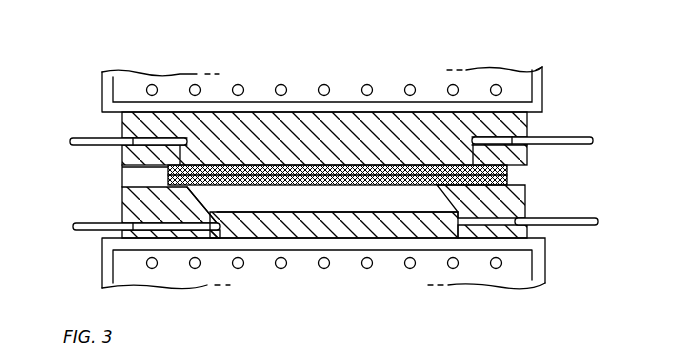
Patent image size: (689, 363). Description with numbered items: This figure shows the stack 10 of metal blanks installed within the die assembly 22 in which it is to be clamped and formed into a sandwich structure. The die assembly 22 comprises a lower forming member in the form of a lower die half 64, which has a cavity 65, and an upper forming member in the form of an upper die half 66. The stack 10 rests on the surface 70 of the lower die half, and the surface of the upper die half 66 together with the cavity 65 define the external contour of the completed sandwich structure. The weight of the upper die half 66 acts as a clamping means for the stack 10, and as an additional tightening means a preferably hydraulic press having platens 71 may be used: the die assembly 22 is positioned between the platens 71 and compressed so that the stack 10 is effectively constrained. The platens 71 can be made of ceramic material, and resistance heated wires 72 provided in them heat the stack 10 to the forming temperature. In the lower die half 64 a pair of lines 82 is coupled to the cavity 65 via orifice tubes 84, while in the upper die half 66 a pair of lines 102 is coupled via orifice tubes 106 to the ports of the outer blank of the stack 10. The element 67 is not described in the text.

The platen 71 is at (543, 79).
The upper die half 66 is at (287, 108).
The resistance heated wires 72 is at (371, 86).
The die assembly 22 is at (457, 112).
The orifice tube 106 is at (493, 137).
The line 102 is at (583, 141).
The membrane stack 67 is at (520, 172).
The surface 70 is at (127, 182).
The stack 10 is at (268, 186).
The orifice tube 84 is at (497, 210).
The line 82 is at (570, 219).
The cavity 65 is at (337, 201).
The lower die half 64 is at (304, 238).